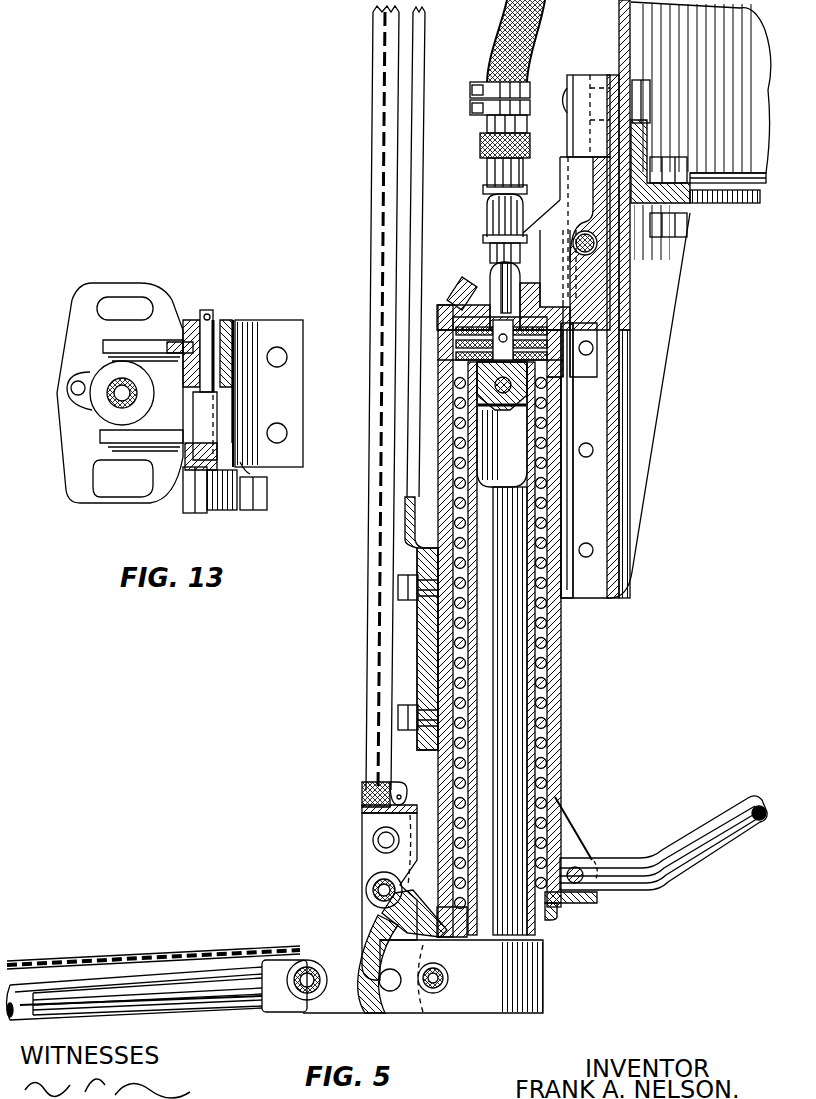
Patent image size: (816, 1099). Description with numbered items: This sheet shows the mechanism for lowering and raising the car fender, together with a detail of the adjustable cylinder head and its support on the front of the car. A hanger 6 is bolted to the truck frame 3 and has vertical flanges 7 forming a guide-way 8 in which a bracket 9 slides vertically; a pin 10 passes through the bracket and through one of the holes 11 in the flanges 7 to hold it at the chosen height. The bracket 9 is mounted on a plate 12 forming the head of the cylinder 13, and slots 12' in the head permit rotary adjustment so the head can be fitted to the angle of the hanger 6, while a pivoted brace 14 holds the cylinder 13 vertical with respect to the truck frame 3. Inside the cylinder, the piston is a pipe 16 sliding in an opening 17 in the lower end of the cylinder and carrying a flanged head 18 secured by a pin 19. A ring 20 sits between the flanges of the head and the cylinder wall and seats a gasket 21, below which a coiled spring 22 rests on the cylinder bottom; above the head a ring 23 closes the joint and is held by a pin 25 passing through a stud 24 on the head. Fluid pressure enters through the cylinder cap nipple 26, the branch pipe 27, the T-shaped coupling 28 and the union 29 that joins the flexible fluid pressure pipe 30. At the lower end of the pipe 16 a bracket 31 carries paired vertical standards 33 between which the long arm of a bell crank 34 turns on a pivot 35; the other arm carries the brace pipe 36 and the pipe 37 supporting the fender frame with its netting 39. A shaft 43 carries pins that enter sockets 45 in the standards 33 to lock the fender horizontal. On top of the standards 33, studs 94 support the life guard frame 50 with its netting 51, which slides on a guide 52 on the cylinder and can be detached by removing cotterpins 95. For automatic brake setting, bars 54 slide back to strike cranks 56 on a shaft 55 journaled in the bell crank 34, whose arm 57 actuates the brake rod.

In FIG. 5, the truck frame 3 is at (619, 27).
In FIG. 5, the hanger 6 is at (640, 400).
In FIG. 13, the hanger 6 is at (280, 465).
In FIG. 13, the vertical flange 7 is at (186, 322).
In FIG. 5, the guide-way 8 is at (580, 136).
In FIG. 13, the guide-way 8 is at (240, 323).
In FIG. 13, the bracket 9 is at (205, 440).
In FIG. 13, the pin 10 is at (210, 312).
In FIG. 5, the hole 11 is at (593, 450).
In FIG. 13, the hole 11 is at (226, 323).
In FIG. 13, the plate 12 is at (102, 393).
In FIG. 13, the slot 12' is at (102, 497).
In FIG. 5, the cylinder 13 is at (562, 652).
In FIG. 5, the pivoted brace 14 is at (692, 873).
In FIG. 5, the pipe 16 is at (501, 711).
In FIG. 5, the opening 17 is at (548, 928).
In FIG. 5, the flanged head 18 is at (470, 355).
In FIG. 5, the pin 19 is at (487, 393).
In FIG. 5, the ring 20 is at (468, 383).
In FIG. 5, the gasket 21 is at (566, 368).
In FIG. 5, the coiled spring 22 is at (546, 688).
In FIG. 5, the ring 23 is at (548, 370).
In FIG. 5, the stud 24 is at (507, 305).
In FIG. 5, the pin 25 is at (506, 336).
In FIG. 5, the nipple 26 is at (493, 251).
In FIG. 13, the nipple 26 is at (112, 396).
In FIG. 5, the branch pipe 27 is at (497, 221).
In FIG. 5, the T-shaped coupling 28 is at (490, 199).
In FIG. 5, the union 29 is at (482, 145).
In FIG. 5, the flexible fluid pressure pipe 30 is at (505, 28).
In FIG. 5, the bracket 31 is at (545, 1003).
In FIG. 5, the vertical standard 33 is at (370, 864).
In FIG. 5, the bell crank 34 is at (366, 903).
In FIG. 5, the pivot 35 is at (384, 838).
In FIG. 5, the brace pipe 36 is at (300, 1010).
In FIG. 5, the pipe 37 is at (118, 1014).
In FIG. 5, the netting 39 is at (100, 955).
In FIG. 5, the shaft 43 is at (433, 1004).
In FIG. 5, the socket 45 is at (392, 1002).
In FIG. 5, the frame 50 is at (370, 646).
In FIG. 5, the netting 51 is at (378, 713).
In FIG. 5, the guide 52 is at (408, 517).
In FIG. 5, the bar 54 is at (185, 1010).
In FIG. 5, the shaft 55 is at (380, 899).
In FIG. 5, the crank 56 is at (368, 1012).
In FIG. 5, the arm 57 is at (430, 920).
In FIG. 5, the stud 94 is at (395, 790).
In FIG. 5, the cotterpin 95 is at (401, 797).